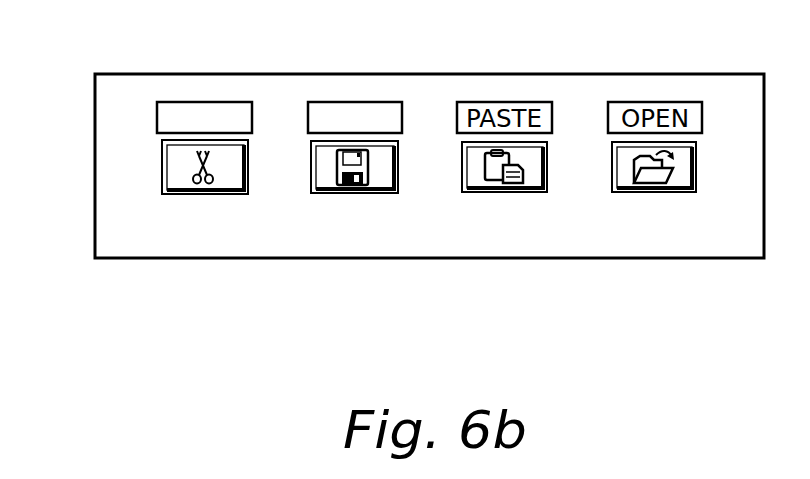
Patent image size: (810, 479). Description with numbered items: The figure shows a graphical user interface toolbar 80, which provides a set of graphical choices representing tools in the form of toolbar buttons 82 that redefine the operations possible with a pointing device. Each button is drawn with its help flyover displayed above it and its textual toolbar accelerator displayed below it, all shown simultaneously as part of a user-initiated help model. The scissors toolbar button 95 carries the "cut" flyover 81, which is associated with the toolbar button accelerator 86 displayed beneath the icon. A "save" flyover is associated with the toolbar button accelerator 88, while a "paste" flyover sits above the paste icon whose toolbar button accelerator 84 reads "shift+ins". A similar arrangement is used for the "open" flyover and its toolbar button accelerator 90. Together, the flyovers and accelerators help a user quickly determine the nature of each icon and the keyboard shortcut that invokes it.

The graphical user interface toolbar 80 is at (95, 100).
The cut flyover 81 is at (178, 102).
The toolbar buttons 82 is at (424, 100).
The toolbar button accelerator 84 is at (561, 241).
The toolbar button accelerator 86 is at (261, 241).
The toolbar button accelerator 88 is at (411, 241).
The toolbar button accelerator 90 is at (713, 241).
The scissors toolbar button 95 is at (177, 194).